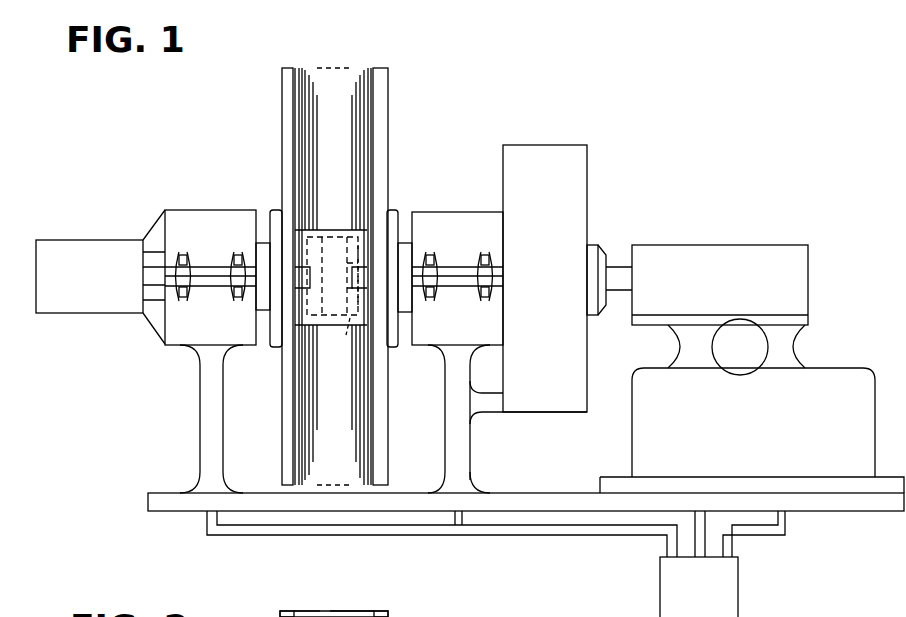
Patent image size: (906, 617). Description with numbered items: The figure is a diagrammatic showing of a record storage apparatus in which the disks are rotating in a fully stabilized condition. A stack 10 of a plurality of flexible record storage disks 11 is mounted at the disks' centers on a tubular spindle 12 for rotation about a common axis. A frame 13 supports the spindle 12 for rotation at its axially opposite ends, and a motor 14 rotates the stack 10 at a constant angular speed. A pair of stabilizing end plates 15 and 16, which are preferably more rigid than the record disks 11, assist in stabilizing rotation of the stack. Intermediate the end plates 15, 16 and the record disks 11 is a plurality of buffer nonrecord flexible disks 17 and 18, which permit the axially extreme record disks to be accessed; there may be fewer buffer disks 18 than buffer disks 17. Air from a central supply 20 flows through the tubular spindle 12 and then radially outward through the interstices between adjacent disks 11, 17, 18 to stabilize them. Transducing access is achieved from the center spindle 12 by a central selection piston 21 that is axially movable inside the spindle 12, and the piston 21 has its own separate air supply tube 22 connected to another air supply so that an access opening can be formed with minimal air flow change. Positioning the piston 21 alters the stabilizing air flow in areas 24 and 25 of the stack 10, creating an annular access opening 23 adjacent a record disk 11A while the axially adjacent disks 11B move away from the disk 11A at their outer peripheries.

The stack 10 is at (340, 243).
The flexible record storage disks 11 is at (370, 63).
The tubular spindle 12 is at (318, 229).
The frame 13 is at (200, 412).
The motor 14 is at (585, 170).
The stabilizing end plate 15 is at (285, 120).
The stabilizing end plate 16 is at (388, 116).
The buffer nonrecord flexible disks 17 is at (297, 62).
The buffer nonrecord flexible disks 18 is at (375, 63).
The central supply 20 is at (740, 573).
The central selection piston 21 is at (353, 327).
The separate air supply tube 22 is at (360, 229).
The annular access opening 23 is at (325, 610).
The area of stack 24 is at (300, 608).
The area of stack 25 is at (365, 608).
The record disk 11A is at (318, 610).
The axially adjacent disks 11B is at (356, 589).